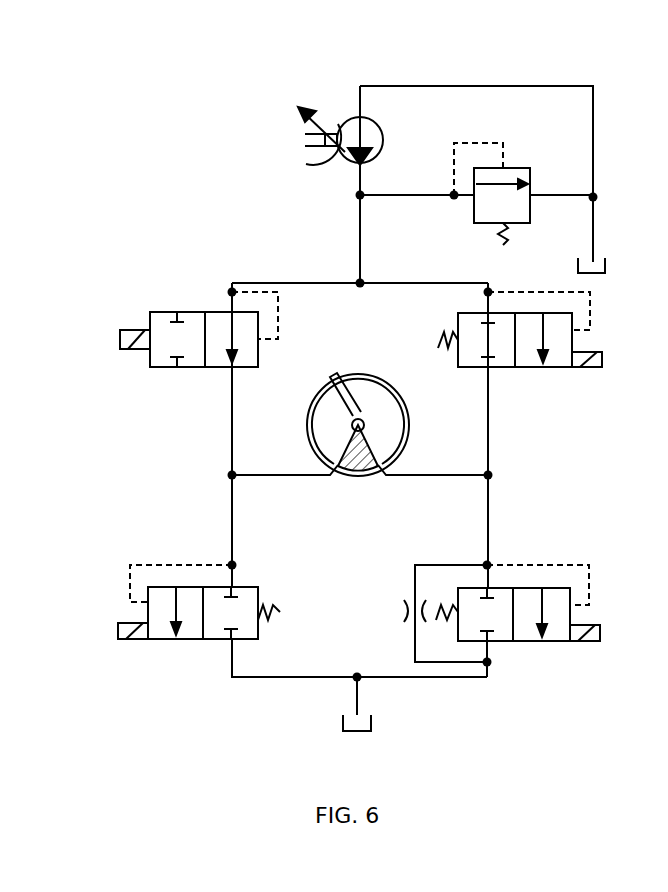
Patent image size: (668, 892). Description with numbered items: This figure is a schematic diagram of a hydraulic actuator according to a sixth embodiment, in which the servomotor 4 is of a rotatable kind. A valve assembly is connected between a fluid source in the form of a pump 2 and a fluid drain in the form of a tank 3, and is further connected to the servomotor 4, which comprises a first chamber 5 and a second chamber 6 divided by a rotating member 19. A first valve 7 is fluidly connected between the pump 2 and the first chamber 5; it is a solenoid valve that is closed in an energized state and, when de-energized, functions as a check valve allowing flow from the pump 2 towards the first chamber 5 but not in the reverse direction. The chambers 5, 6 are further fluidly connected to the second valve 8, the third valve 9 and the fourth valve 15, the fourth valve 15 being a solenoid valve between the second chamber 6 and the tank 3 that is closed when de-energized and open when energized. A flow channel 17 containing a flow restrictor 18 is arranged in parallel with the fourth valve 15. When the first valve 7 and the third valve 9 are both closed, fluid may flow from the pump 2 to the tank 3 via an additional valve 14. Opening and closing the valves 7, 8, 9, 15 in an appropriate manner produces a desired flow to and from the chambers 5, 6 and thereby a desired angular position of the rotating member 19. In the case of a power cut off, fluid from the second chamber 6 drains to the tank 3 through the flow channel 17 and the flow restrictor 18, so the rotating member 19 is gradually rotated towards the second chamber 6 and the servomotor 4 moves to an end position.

The pump 2 is at (345, 120).
The tank 3 is at (605, 265).
The servomotor 4 is at (360, 405).
The first chamber 5 is at (330, 431).
The second chamber 6 is at (390, 433).
The first valve 7 is at (196, 312).
The second valve 8 is at (148, 615).
The third valve 9 is at (535, 368).
The additional valve 14 is at (517, 170).
The fourth valve 15 is at (522, 643).
The flow channel 17 is at (447, 665).
The flow restrictor 18 is at (405, 617).
The rotating member 19 is at (341, 398).